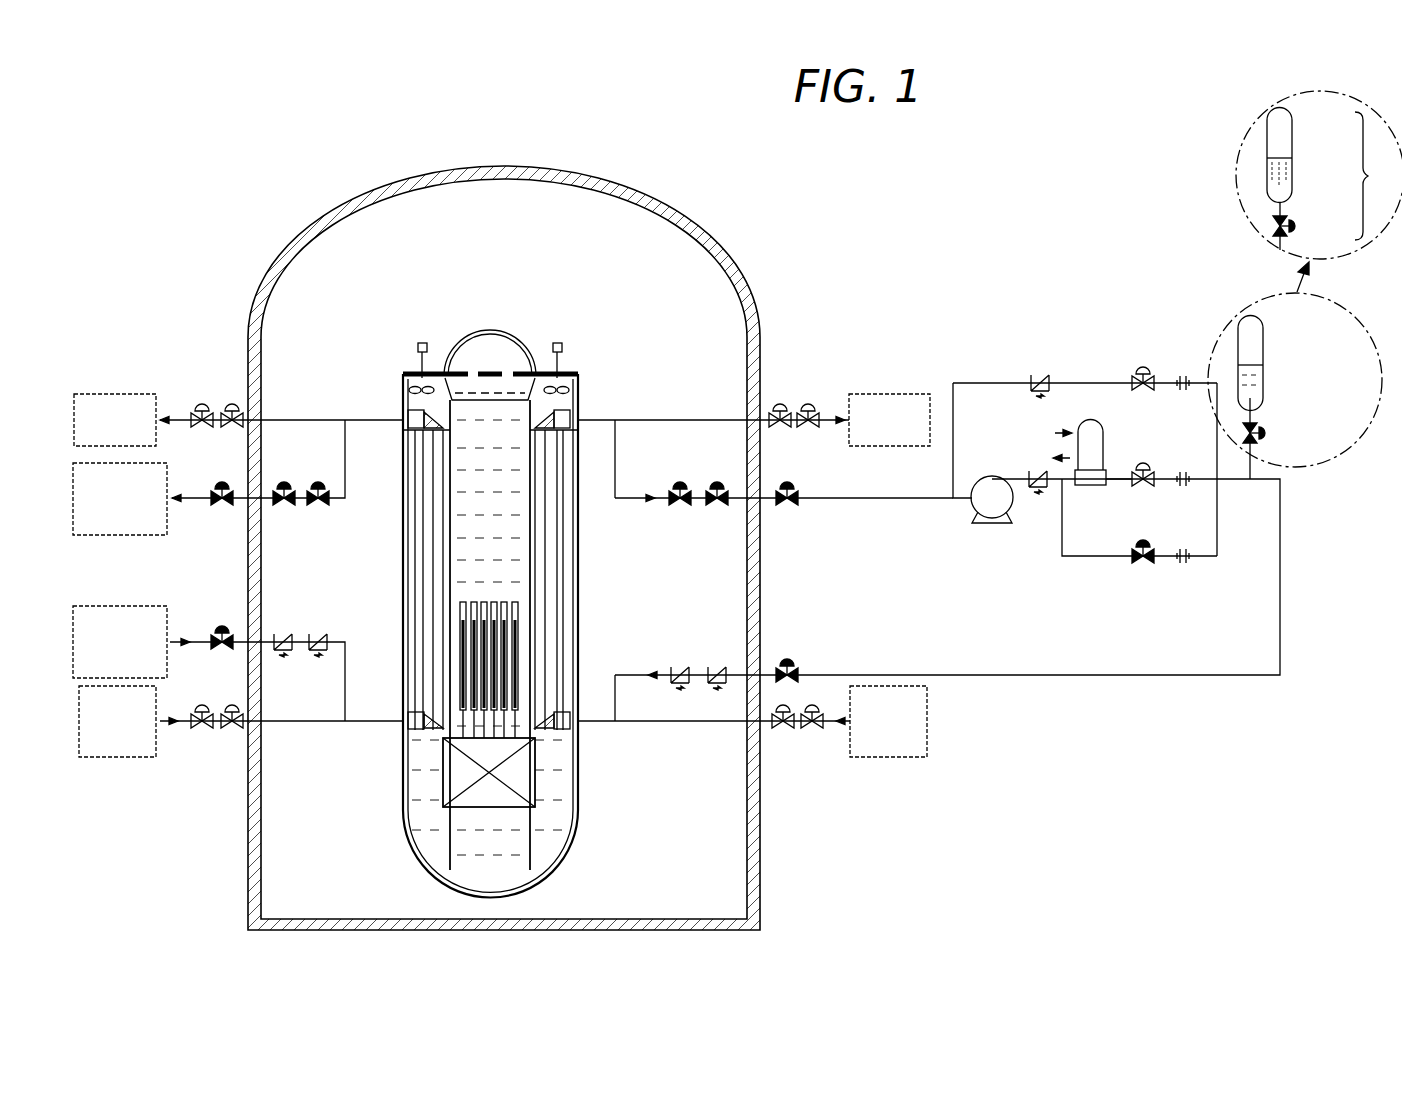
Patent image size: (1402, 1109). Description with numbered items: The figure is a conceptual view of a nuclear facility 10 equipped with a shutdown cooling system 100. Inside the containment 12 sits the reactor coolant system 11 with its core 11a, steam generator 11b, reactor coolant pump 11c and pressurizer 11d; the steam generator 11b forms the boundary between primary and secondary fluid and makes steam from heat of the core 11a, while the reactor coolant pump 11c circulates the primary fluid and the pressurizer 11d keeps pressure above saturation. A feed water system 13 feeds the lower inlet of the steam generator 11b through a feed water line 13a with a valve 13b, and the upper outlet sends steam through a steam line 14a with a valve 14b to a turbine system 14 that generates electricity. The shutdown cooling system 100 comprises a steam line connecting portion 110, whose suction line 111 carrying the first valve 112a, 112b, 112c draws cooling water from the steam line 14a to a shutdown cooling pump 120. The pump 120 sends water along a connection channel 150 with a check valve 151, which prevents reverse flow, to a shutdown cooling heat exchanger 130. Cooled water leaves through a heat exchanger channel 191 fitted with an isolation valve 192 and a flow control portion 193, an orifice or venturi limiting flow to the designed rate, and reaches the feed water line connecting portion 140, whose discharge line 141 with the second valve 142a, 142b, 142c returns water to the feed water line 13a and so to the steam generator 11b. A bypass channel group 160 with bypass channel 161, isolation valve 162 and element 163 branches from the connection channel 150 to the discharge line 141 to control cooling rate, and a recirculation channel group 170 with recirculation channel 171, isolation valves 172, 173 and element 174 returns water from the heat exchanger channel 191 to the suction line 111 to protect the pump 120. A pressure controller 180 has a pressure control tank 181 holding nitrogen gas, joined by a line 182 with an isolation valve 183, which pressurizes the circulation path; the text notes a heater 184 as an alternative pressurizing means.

The nuclear facility 10 is at (172, 208).
The containment 12 is at (362, 198).
The reactor coolant system 11 is at (404, 762).
The core 11a is at (446, 790).
The steam generator 11b is at (416, 537).
The reactor coolant pump 11c is at (422, 343).
The pressurizer 11d is at (483, 345).
The turbine system 14 is at (126, 393).
The steam line 14a is at (598, 413).
The valve 14b is at (780, 402).
The feed water system 13 is at (140, 758).
The feed water line 13a is at (596, 730).
The valve 13b is at (786, 732).
The steam line connecting portion 110 is at (784, 533).
The suction line 111 is at (642, 505).
The isolation valve 112a is at (683, 508).
The isolation valve 112b is at (720, 508).
The isolation valve 112c is at (790, 515).
The feed water line connecting portion 140 is at (947, 584).
The discharge line 141 is at (636, 670).
The check valve 142a is at (683, 667).
The check valve 142b is at (720, 667).
The isolation valve 142c is at (788, 653).
The shutdown cooling system 100 is at (1162, 266).
The recirculation channel 170 is at (1085, 334).
The recirculation channel 171 is at (993, 380).
The isolation valve 172 is at (1040, 375).
The isolation valve 173 is at (1142, 372).
The orifice 174 is at (1180, 352).
The connection channel 150 is at (1003, 478).
The check valve 151 is at (1036, 490).
The shutdown cooling pump 120 is at (990, 520).
The shutdown cooling heat exchanger 130 is at (1106, 432).
The bypass channel 160 is at (1139, 563).
The bypass channel 161 is at (1089, 562).
The isolation valve 162 is at (1143, 566).
The orifice 163 is at (1183, 579).
The heat exchanger channel 191 is at (1118, 483).
The isolation valve 192 is at (1146, 490).
The flow control portion 193 is at (1188, 486).
The pressure controller 180 is at (1295, 370).
The pressure control tank 181 is at (1264, 342).
The line 182 is at (1252, 406).
The isolation valve 183 is at (1283, 428).
The heater 184 is at (1294, 135).